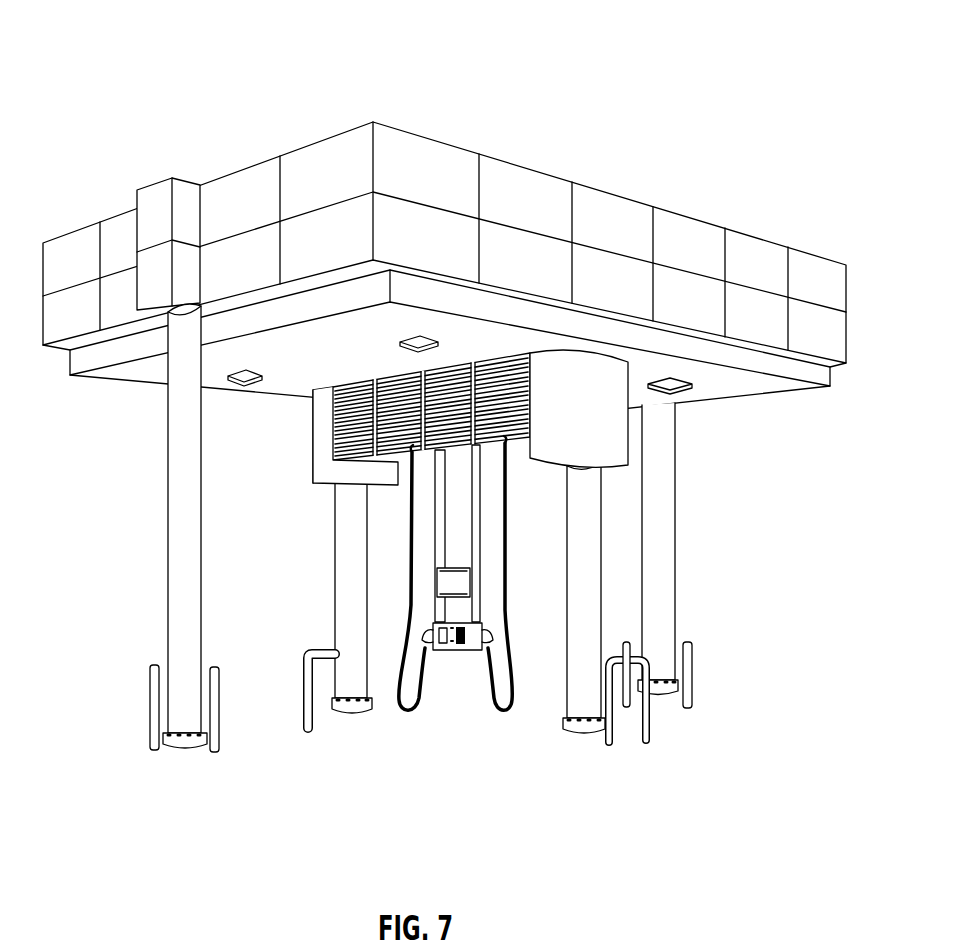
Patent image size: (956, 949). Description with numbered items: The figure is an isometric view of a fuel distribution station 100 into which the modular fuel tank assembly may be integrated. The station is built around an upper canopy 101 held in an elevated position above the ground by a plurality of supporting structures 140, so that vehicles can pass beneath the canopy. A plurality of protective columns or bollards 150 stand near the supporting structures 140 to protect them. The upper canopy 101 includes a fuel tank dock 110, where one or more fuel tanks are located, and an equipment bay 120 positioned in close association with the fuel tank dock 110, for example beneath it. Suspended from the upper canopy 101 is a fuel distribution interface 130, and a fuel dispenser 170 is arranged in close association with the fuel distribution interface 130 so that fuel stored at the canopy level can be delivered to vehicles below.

The fuel distribution station 100 is at (111, 43).
The fuel tank dock 110 is at (87, 225).
The upper canopy 101 is at (770, 392).
The equipment bay 120 is at (312, 435).
The fuel distribution interface 130 is at (430, 548).
The supporting structures 140 is at (168, 440).
The protective columns or bollards 150 is at (148, 722).
The fuel dispenser 170 is at (505, 620).